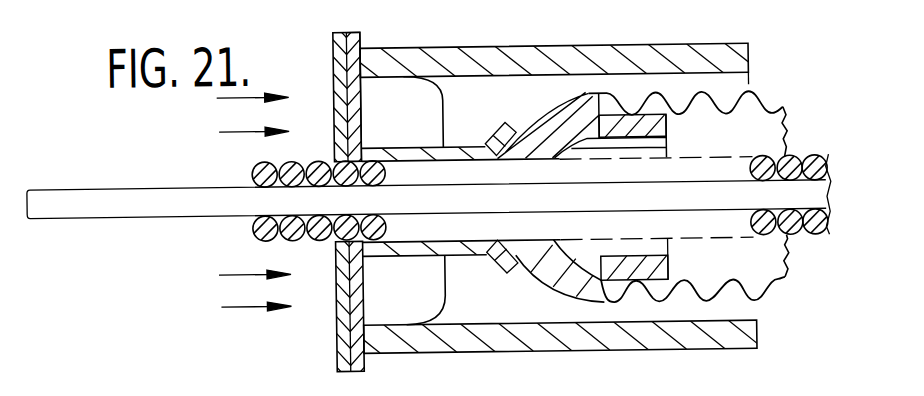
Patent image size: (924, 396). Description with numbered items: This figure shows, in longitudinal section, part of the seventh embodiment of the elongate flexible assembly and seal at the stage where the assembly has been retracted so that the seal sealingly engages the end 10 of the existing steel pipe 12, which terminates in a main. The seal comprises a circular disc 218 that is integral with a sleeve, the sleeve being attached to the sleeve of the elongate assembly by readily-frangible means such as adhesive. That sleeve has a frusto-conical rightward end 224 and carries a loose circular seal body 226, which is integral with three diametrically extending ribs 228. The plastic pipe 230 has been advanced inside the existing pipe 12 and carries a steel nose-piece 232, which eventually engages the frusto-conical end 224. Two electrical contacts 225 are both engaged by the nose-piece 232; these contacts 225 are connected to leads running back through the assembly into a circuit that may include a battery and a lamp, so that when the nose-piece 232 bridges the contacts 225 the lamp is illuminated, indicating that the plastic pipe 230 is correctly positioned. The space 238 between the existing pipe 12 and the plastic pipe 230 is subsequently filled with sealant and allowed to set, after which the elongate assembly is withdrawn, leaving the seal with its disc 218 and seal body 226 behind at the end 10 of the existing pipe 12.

The end 10 is at (337, 337).
The existing steel pipe 12 is at (675, 52).
The circular disc 218 is at (335, 30).
The frusto-conical rightward end 224 is at (489, 126).
The electrical contacts 225 is at (667, 147).
The loose circular seal body 226 is at (357, 30).
The diametrically extending ribs 228 is at (428, 116).
The plastic pipe 230 is at (689, 243).
The steel nose-piece 232 is at (550, 267).
The space 238 is at (681, 311).